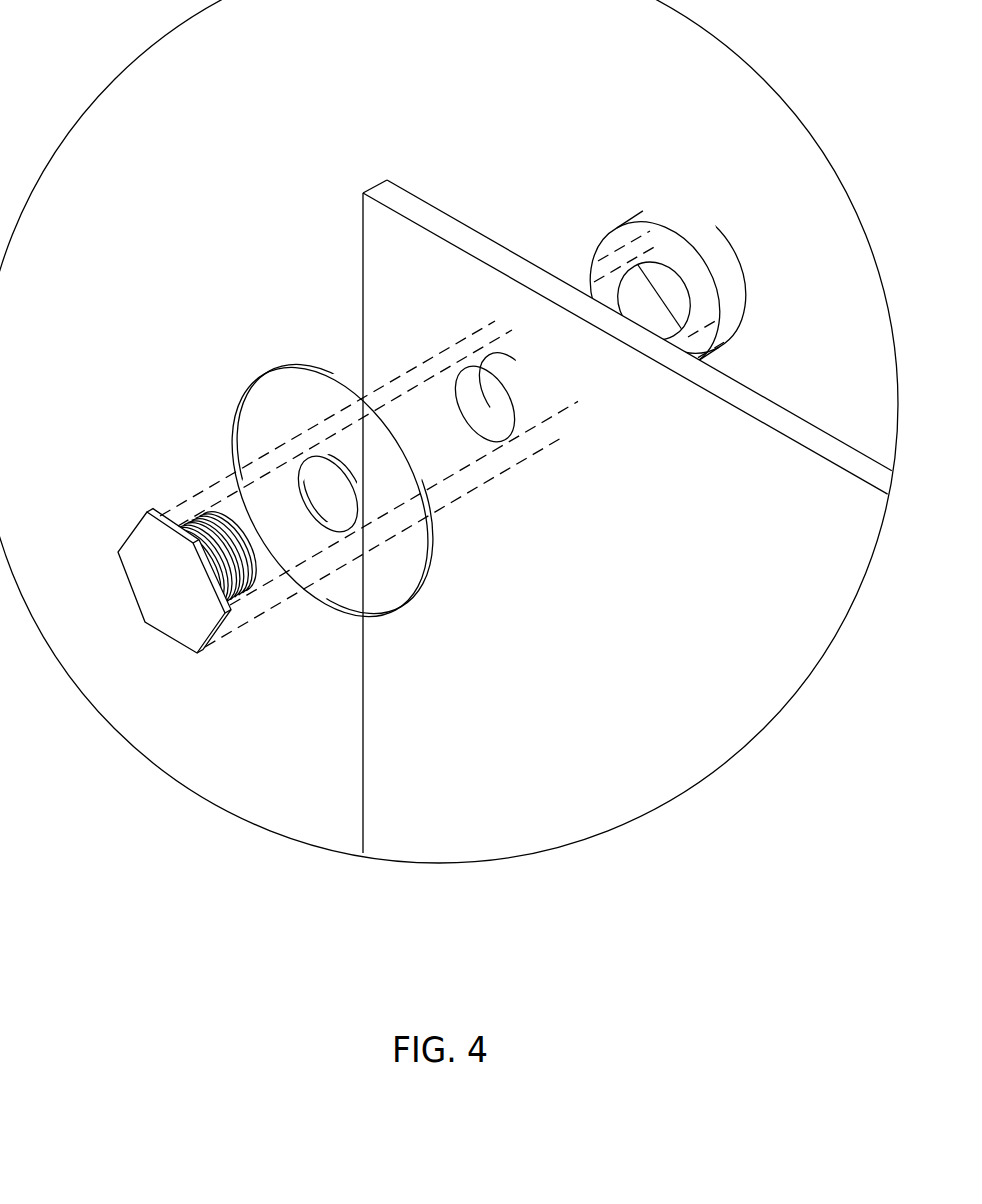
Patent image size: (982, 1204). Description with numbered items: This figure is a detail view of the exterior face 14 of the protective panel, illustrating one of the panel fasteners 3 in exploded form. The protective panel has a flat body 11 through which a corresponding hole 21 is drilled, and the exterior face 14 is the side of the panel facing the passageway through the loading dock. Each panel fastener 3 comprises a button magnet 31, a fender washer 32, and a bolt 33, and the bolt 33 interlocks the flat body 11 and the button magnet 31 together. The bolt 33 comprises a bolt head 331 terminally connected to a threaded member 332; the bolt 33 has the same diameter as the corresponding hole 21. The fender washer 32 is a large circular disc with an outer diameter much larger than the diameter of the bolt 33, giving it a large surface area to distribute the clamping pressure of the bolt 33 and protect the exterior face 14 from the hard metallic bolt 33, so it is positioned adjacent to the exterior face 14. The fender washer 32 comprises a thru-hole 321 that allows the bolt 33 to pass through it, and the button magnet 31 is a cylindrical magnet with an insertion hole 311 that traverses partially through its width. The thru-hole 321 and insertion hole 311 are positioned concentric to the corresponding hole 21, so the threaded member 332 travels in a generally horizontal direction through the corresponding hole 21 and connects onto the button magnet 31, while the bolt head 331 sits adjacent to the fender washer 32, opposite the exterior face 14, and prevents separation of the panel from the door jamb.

The flat body 11 is at (627, 500).
The exterior face 14 is at (604, 597).
The corresponding hole 21 is at (497, 394).
The panel fastener 3 is at (289, 338).
The button magnet 31 is at (682, 288).
The insertion hole 311 is at (636, 277).
The fender washer 32 is at (333, 491).
The thru-hole 321 is at (320, 482).
The bolt 33 is at (149, 567).
The bolt head 331 is at (172, 630).
The threaded member 332 is at (215, 511).